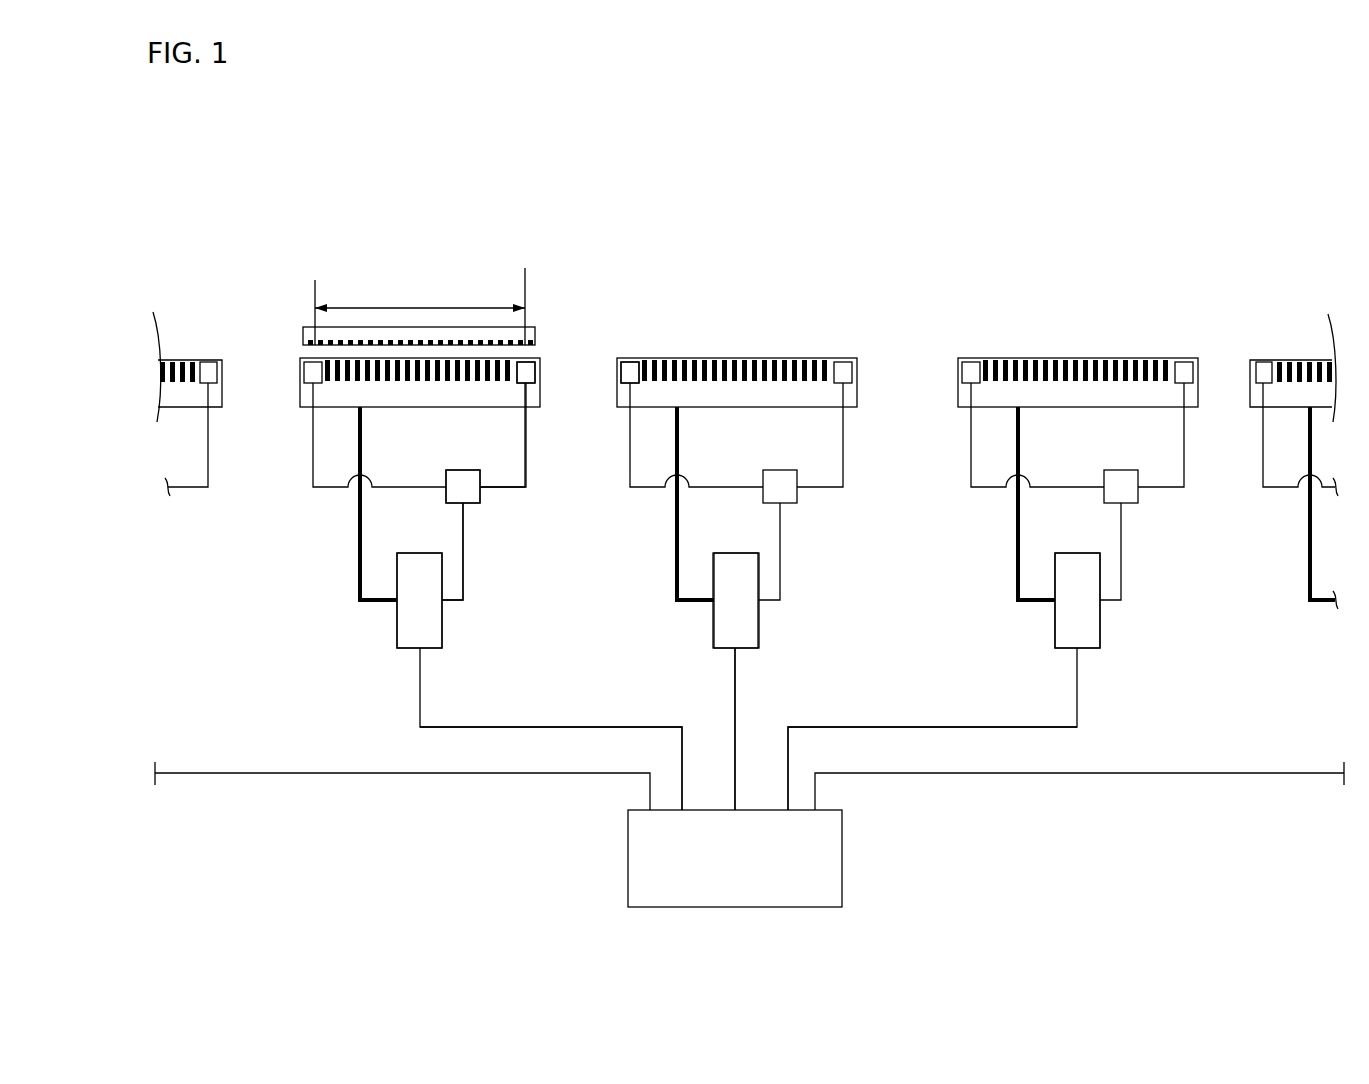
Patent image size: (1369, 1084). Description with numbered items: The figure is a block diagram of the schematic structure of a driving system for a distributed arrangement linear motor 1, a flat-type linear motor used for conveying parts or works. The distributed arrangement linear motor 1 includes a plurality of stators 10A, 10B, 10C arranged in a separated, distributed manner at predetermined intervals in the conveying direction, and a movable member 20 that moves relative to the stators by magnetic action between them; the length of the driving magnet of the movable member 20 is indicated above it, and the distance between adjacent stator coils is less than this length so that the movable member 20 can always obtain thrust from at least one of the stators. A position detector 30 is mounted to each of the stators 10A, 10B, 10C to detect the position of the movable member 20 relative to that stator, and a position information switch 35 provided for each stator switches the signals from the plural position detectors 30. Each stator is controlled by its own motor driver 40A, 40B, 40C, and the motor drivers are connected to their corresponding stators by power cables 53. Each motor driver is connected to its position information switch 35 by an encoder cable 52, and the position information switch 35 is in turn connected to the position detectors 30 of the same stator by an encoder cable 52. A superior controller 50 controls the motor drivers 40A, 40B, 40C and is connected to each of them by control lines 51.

The distributed arrangement linear motor 1 is at (240, 229).
The movable member 20 is at (539, 324).
The stator 10A is at (298, 412).
The stator 10B is at (621, 412).
The stator 10C is at (955, 409).
The position detector 30 is at (621, 385).
The position information switch 35 is at (452, 504).
The encoder cable 52 is at (525, 452).
The power cable 53 is at (360, 575).
The motor driver 40A is at (447, 637).
The motor driver 40B is at (760, 635).
The motor driver 40C is at (1100, 637).
The control line 51 is at (735, 680).
The superior controller 50 is at (843, 855).